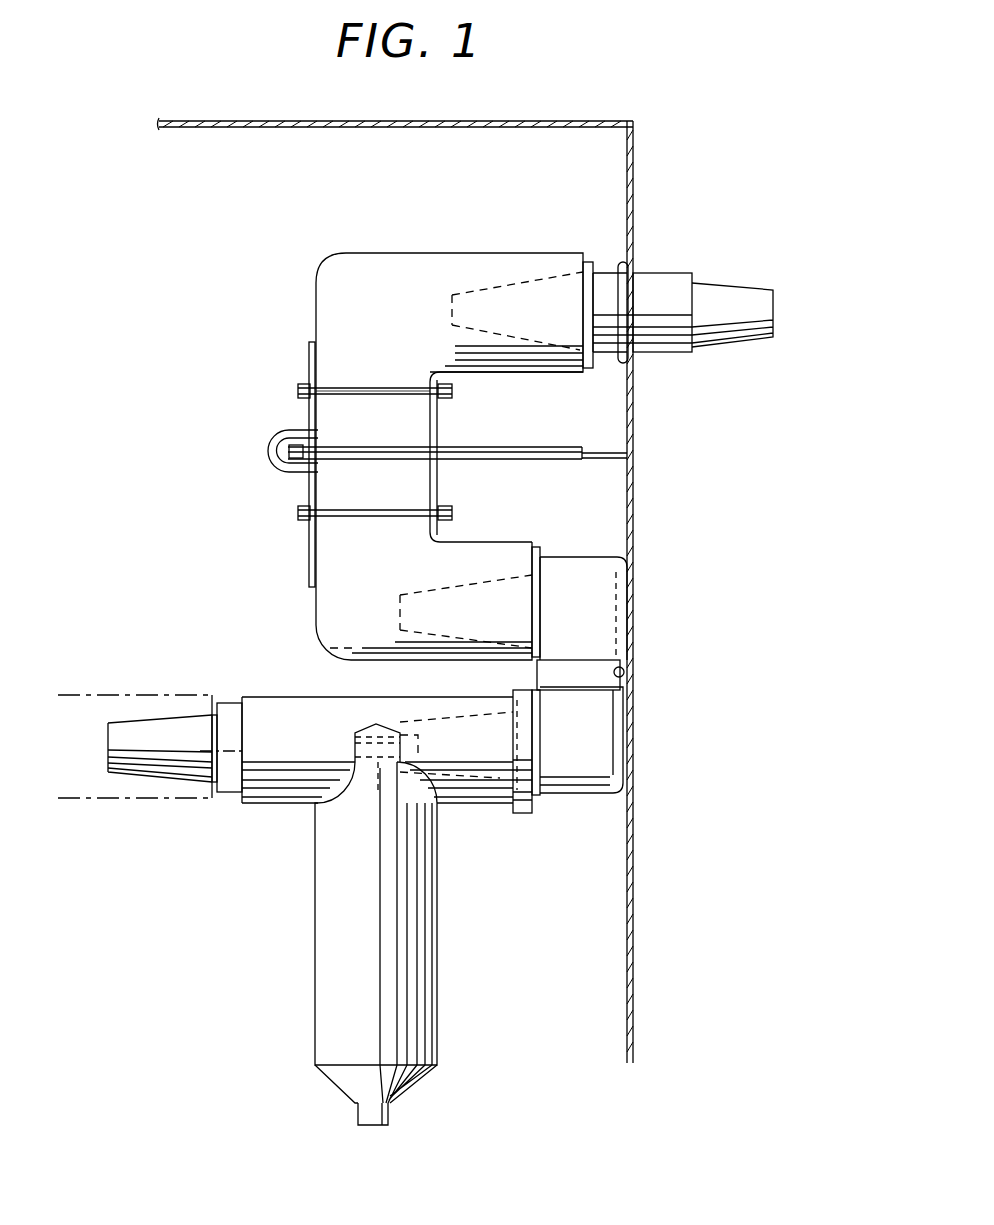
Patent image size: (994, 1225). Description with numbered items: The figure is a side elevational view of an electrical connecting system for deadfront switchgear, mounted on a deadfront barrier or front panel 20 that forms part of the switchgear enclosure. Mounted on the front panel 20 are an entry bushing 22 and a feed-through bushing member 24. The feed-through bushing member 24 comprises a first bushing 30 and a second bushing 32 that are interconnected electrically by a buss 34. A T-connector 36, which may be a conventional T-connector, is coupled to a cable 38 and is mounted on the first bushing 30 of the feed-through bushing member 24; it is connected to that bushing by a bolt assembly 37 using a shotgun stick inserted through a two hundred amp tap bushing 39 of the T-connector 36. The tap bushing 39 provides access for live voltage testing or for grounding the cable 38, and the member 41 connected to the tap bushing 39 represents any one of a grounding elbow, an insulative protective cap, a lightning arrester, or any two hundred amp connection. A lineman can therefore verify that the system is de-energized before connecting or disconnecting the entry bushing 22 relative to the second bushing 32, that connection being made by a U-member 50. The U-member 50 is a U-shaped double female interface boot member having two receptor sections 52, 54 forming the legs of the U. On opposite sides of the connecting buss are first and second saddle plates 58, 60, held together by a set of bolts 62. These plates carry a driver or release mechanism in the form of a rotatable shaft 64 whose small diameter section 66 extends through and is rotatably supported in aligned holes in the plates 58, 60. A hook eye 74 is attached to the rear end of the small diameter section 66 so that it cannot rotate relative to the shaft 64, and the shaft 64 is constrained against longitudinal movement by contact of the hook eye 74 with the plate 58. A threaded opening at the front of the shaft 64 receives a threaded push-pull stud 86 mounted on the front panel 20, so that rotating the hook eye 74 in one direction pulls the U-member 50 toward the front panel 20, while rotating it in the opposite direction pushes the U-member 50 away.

The front panel 20 is at (633, 866).
The entry bushing 22 is at (607, 268).
The feed-through bushing member 24 is at (573, 802).
The first bushing 30 is at (458, 790).
The second bushing 32 is at (478, 582).
The buss 34 is at (598, 672).
The T-connector 36 is at (307, 951).
The bolt assembly 37 is at (370, 727).
The cable 38 is at (395, 1113).
The tap bushing 39 is at (150, 775).
The member 41 is at (141, 695).
The U-member 50 is at (298, 553).
The receptor section 52 is at (492, 538).
The receptor section 54 is at (470, 250).
The first saddle plate 58 is at (305, 409).
The second saddle plate 60 is at (440, 425).
The bolts 62 is at (350, 388).
The rotatable shaft 64 is at (522, 447).
The small diameter section 66 is at (330, 467).
The hook eye 74 is at (265, 452).
The push-pull stud 86 is at (625, 452).